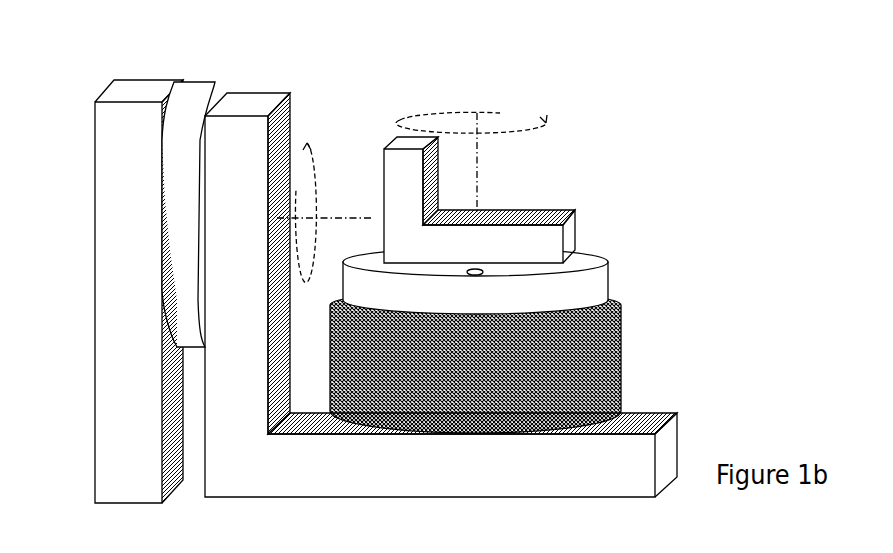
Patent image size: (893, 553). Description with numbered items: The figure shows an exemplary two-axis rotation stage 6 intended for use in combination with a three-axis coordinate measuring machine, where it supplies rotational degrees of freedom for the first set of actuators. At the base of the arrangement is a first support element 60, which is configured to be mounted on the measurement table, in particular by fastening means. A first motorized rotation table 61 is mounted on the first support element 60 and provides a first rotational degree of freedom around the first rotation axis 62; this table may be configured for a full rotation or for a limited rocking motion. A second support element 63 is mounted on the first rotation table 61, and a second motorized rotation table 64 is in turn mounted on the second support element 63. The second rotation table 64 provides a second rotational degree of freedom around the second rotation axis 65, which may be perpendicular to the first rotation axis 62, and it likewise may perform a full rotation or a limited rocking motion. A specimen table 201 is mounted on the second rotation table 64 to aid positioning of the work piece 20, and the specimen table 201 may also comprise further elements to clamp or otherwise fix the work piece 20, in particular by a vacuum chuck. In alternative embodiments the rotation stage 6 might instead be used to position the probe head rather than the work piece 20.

The two-axis rotation stage 6 is at (701, 139).
The work piece 20 is at (564, 210).
The first support element 60 is at (163, 78).
The first motorized rotation table 61 is at (208, 114).
The first rotation axis 62 is at (317, 217).
The second support element 63 is at (290, 116).
The second motorized rotation table 64 is at (622, 332).
The second rotation axis 65 is at (478, 187).
The specimen table 201 is at (608, 266).